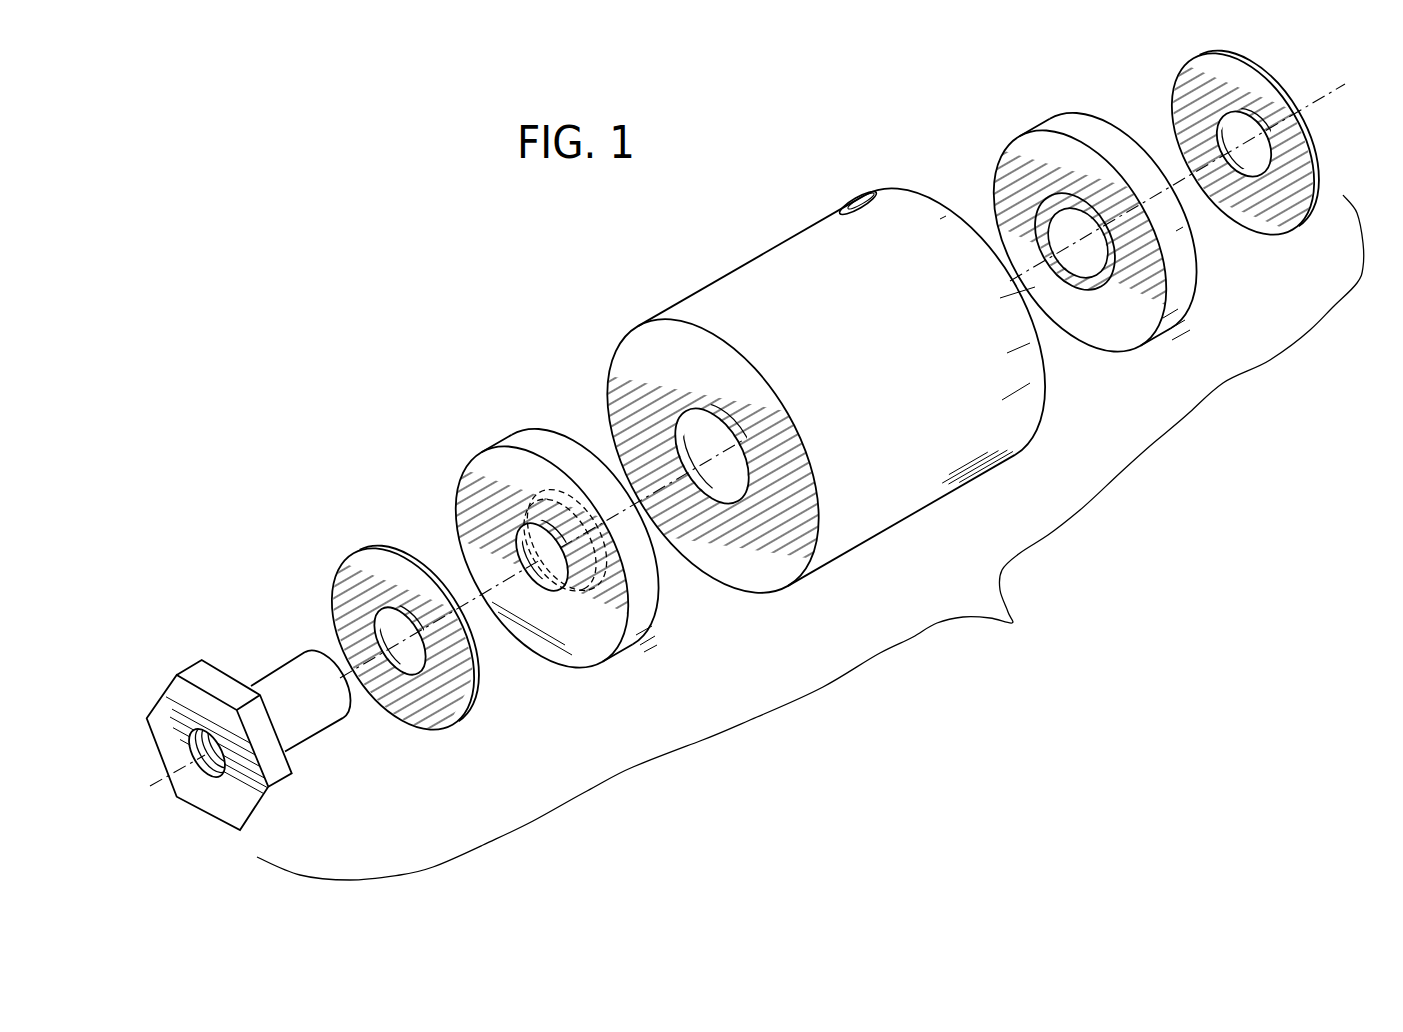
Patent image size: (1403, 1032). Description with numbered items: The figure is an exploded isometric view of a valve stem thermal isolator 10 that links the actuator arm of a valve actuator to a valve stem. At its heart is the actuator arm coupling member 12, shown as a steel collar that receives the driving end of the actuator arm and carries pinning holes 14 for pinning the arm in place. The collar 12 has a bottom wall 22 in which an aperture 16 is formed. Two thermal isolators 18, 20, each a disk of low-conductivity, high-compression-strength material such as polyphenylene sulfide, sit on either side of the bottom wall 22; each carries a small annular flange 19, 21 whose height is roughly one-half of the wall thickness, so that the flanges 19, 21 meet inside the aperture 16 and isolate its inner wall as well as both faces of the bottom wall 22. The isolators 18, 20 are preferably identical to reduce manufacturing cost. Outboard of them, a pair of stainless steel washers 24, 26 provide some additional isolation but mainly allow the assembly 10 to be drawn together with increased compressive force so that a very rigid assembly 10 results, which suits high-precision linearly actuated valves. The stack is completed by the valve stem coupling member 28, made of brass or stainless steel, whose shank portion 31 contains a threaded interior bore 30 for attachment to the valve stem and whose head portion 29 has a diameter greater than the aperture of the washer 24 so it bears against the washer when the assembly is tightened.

The valve stem thermal isolator 10 is at (810, 537).
The actuator arm coupling member 12 is at (799, 395).
The pinning holes 14 is at (853, 203).
The aperture 16 is at (725, 492).
The thermal isolator 18 is at (530, 529).
The annular flange 19 is at (565, 455).
The thermal isolator 20 is at (1066, 251).
The annular flange 21 is at (1088, 288).
The bottom wall 22 is at (644, 338).
The washer 24 is at (350, 570).
The washer 26 is at (1183, 93).
The valve stem coupling member 28 is at (288, 764).
The head portion 29 is at (267, 803).
The interior bore 30 is at (212, 773).
The shank portion 31 is at (317, 722).